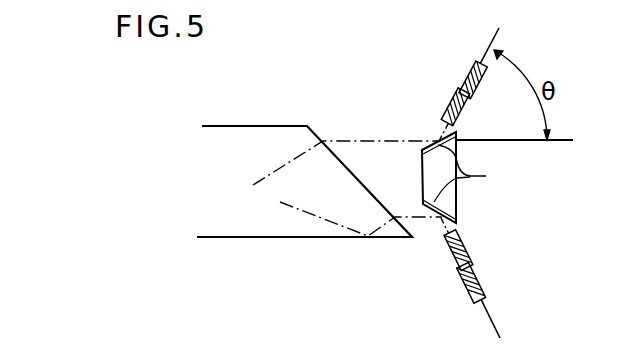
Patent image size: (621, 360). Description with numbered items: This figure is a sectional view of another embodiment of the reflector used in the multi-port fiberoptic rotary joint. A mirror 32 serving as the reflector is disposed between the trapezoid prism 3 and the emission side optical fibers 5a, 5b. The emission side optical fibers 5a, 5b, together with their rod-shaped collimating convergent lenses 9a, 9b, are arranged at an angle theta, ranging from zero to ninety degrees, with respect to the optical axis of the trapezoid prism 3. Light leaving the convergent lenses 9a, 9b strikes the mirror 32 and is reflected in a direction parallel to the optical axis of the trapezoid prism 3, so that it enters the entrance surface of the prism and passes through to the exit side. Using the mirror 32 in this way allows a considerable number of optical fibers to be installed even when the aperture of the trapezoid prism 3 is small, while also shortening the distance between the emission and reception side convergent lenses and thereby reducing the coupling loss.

The trapezoid prism 3 is at (243, 125).
The mirror 32 is at (469, 177).
The emission side optical fiber 5a is at (495, 36).
The emission side optical fiber 5b is at (495, 328).
The rod-shaped collimating convergent lens 9a is at (456, 97).
The rod-shaped collimating convergent lens 9b is at (462, 241).